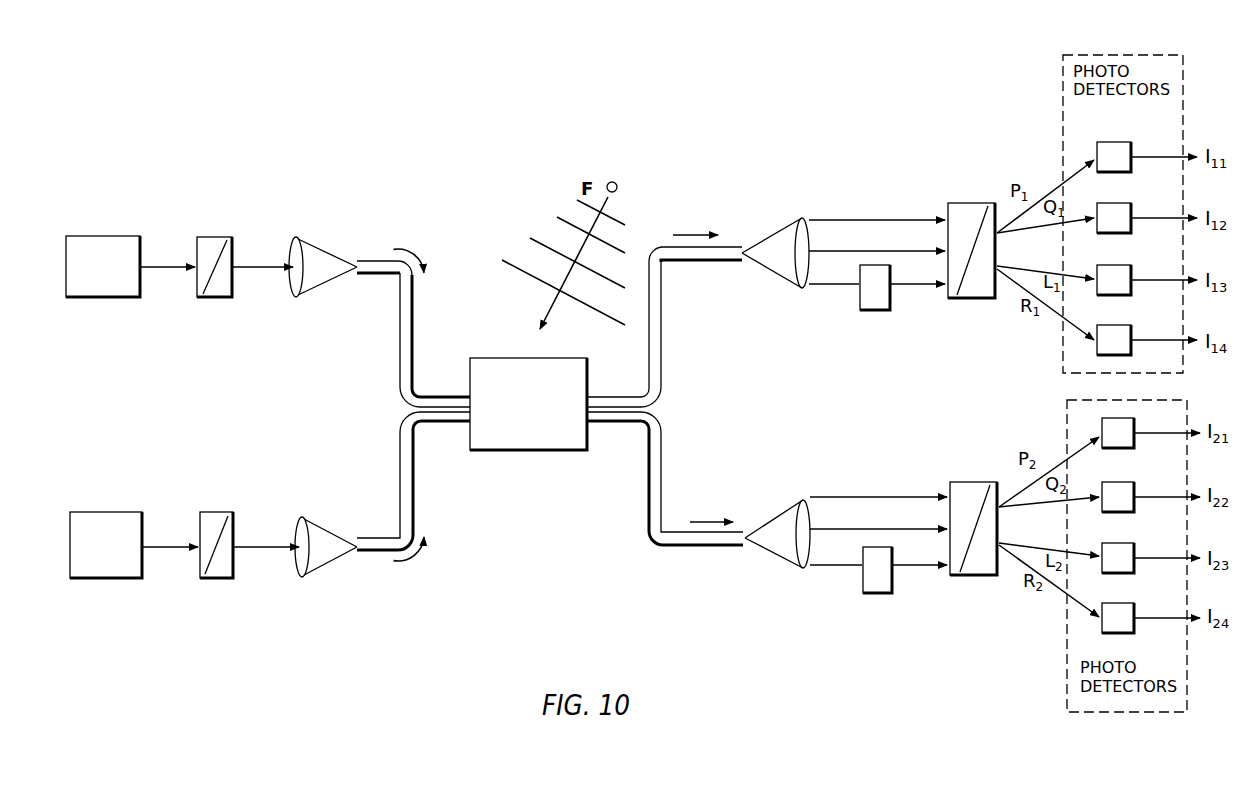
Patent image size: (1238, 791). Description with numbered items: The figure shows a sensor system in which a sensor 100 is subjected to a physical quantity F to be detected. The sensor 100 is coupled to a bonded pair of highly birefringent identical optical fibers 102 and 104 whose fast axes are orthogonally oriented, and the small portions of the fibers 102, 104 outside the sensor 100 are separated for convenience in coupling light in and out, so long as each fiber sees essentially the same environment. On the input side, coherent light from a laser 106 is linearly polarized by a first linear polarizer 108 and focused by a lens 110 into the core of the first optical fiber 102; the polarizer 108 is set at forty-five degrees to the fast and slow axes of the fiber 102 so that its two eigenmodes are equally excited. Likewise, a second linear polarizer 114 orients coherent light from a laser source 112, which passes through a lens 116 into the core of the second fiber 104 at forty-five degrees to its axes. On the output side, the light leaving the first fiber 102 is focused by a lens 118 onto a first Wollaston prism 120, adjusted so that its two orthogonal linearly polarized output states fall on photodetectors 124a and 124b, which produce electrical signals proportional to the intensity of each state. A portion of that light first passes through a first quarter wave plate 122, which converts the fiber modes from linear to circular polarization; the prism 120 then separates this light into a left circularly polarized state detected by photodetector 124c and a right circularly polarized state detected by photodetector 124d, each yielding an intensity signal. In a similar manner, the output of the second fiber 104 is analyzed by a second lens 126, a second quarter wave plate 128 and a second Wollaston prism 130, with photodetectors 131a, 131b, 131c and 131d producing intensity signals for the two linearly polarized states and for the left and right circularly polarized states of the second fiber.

The sensor 100 is at (540, 427).
The first optical fiber 102 is at (414, 323).
The second optical fiber 104 is at (414, 486).
The laser 106 is at (108, 236).
The first linear polarizer 108 is at (213, 237).
The lens 110 is at (292, 238).
The laser source 112 is at (108, 512).
The second linear polarizer 114 is at (217, 512).
The lens 116 is at (298, 518).
The lens 118 is at (801, 218).
The first Wollaston prism 120 is at (966, 203).
The first quarter wave plate 122 is at (878, 311).
The photodetector 124a is at (1114, 173).
The photodetector 124b is at (1114, 234).
The photodetector 124c is at (1114, 296).
The photodetector 124d is at (1114, 356).
The second lens 126 is at (801, 500).
The second quarter wave plate 128 is at (880, 594).
The second Wollaston prism 130 is at (960, 482).
The photodetector 131a is at (1116, 449).
The photodetector 131b is at (1116, 513).
The photodetector 131c is at (1116, 574).
The photodetector 131d is at (1116, 634).